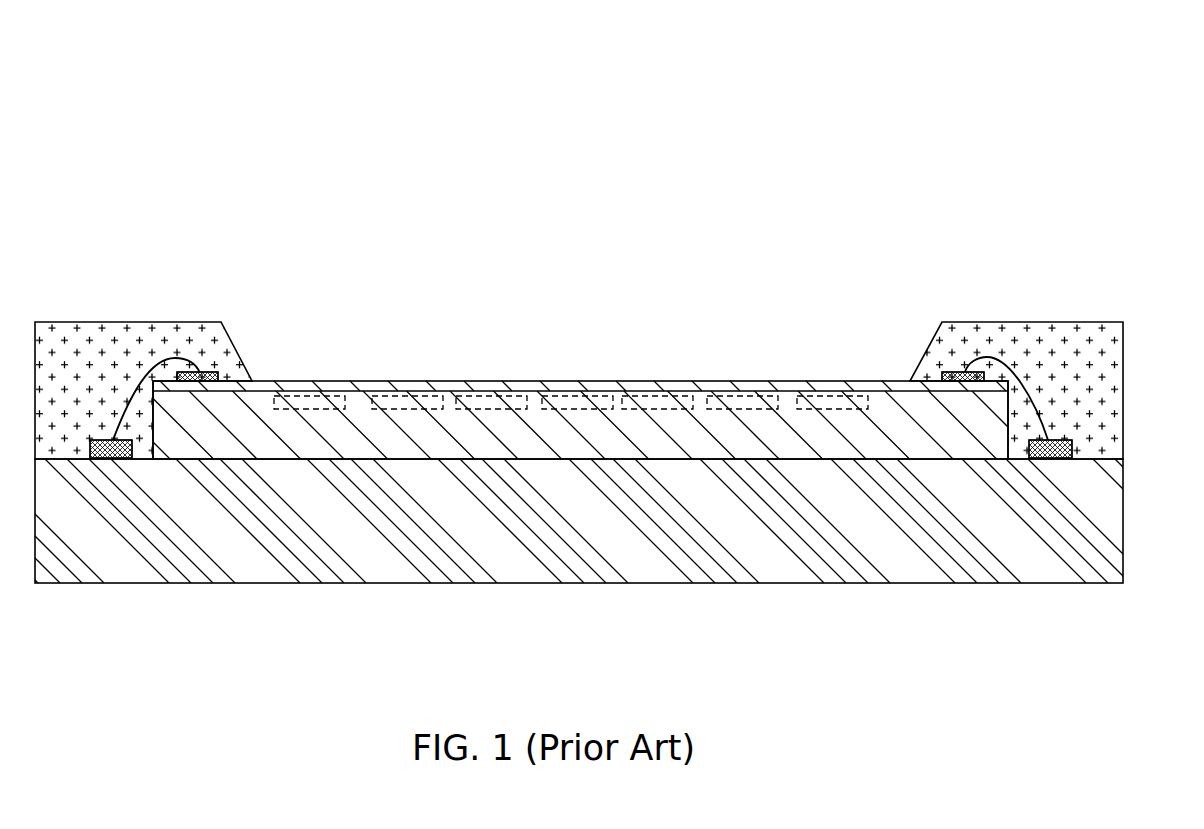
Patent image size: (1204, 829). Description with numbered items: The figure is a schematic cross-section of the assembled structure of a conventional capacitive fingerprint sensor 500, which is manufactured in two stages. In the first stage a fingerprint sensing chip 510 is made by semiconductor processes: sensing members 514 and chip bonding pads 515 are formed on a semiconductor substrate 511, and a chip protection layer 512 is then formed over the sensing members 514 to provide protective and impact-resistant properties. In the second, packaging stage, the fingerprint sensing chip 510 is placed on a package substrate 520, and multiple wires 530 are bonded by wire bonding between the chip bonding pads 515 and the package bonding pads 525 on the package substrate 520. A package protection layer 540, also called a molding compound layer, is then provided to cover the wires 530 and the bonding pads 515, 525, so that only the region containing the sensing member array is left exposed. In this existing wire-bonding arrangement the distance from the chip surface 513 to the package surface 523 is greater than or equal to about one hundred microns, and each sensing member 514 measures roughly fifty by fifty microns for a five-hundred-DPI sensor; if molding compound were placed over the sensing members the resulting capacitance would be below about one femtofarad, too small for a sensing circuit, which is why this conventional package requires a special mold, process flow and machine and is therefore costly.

The capacitive fingerprint sensor 500 is at (736, 308).
The fingerprint sensing chip 510 is at (228, 47).
The semiconductor substrate 511 is at (540, 405).
The chip protection layer 512 is at (607, 390).
The chip surface 513 is at (320, 398).
The sensing members 514 is at (392, 400).
The chip bonding pads 515 is at (937, 380).
The package substrate 520 is at (358, 560).
The package surface 523 is at (579, 351).
The package bonding pads 525 is at (1067, 440).
The wires 530 is at (1028, 390).
The package protection layer 540 is at (146, 342).